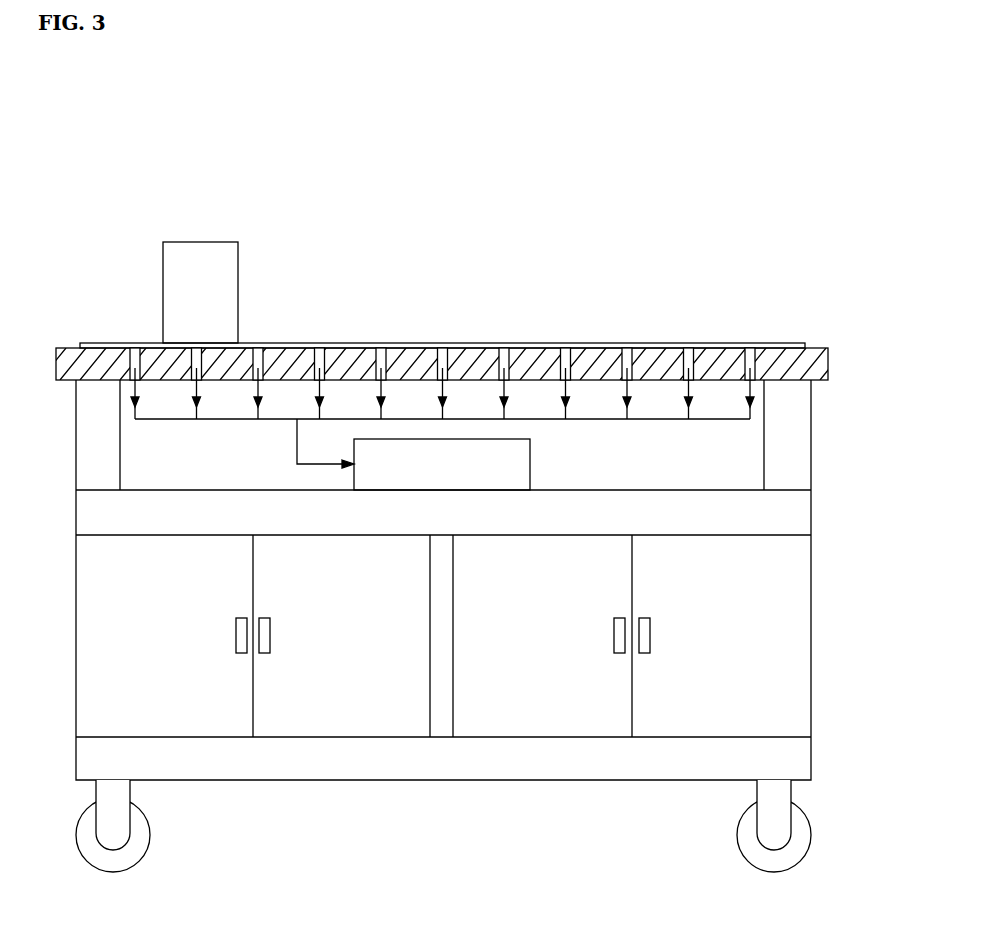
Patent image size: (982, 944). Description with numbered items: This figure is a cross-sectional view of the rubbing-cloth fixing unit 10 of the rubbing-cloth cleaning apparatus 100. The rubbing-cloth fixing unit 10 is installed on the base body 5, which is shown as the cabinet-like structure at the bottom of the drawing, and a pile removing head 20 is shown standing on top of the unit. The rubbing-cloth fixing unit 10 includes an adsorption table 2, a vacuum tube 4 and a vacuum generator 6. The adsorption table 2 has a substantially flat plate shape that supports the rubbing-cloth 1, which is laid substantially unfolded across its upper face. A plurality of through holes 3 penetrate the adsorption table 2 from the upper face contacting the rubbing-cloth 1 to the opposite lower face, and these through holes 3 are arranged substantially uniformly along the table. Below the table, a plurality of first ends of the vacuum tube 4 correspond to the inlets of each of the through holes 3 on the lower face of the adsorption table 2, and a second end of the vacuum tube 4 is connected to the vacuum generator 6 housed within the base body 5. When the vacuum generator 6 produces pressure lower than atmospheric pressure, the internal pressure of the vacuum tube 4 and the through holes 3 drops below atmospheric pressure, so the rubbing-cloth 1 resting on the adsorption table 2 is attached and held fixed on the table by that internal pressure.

The rubbing-cloth cleaning apparatus 100 is at (610, 166).
The pile removing head 20 is at (253, 234).
The rubbing-cloth fixing unit 10 is at (822, 347).
The rubbing-cloth 1 is at (480, 343).
The adsorption table 2 is at (815, 363).
The through hole 3 is at (701, 360).
The vacuum tube 4 is at (730, 419).
The vacuum generator 6 is at (530, 462).
The base body 5 is at (795, 634).